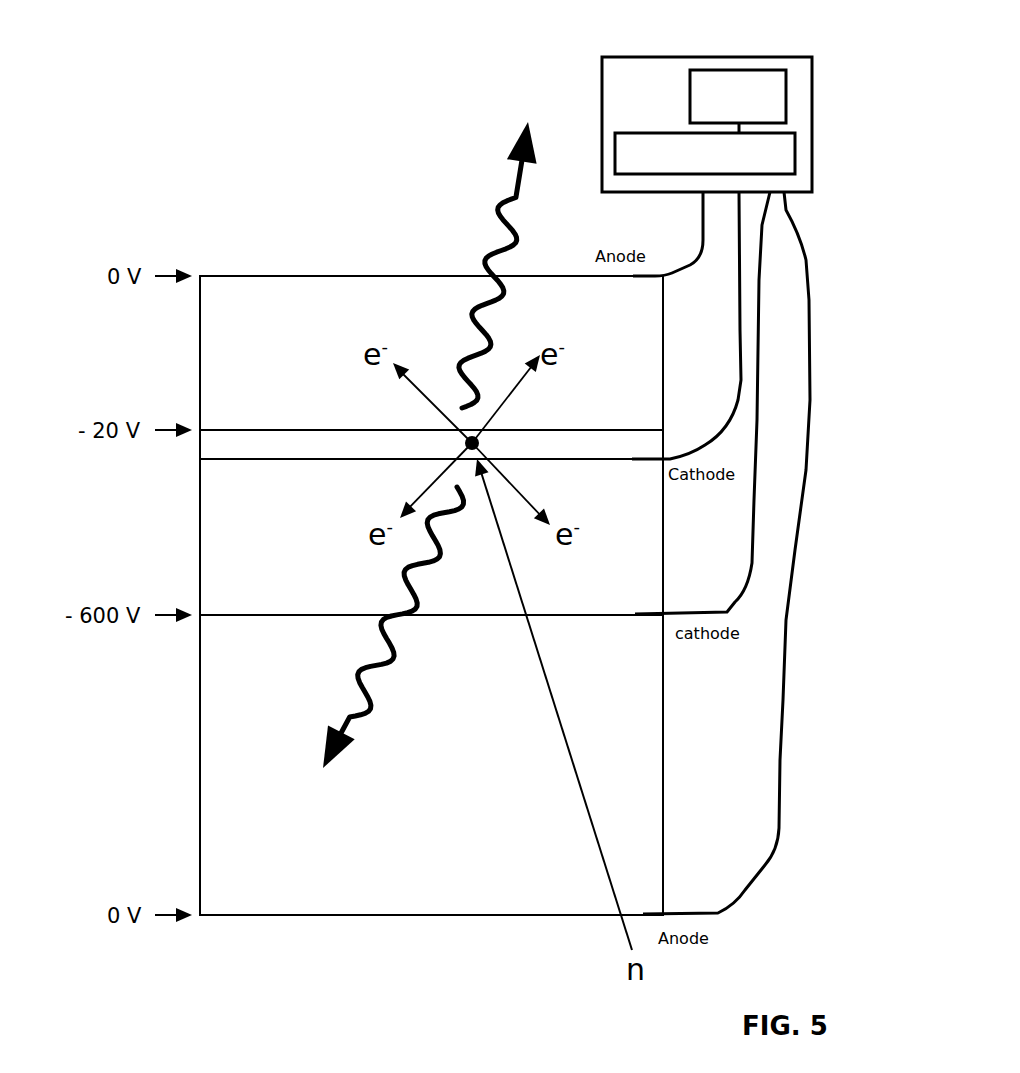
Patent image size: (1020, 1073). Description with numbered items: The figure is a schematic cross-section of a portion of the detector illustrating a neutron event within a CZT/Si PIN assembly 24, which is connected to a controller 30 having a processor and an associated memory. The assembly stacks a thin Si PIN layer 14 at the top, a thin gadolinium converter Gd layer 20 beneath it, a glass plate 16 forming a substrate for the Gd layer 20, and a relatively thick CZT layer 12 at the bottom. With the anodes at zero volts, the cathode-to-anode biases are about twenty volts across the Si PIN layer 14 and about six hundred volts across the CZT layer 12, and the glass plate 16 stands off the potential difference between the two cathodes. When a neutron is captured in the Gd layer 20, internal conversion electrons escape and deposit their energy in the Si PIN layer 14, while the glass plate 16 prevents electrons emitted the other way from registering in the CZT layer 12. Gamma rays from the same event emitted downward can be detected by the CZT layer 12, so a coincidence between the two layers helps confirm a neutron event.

The CZT layer 12 is at (215, 748).
The Si PIN layer 14 is at (223, 349).
The glass plate 16 is at (220, 558).
The Gd layer 20 is at (222, 443).
The CZT/Si PIN assembly 24 is at (268, 202).
The controller 30 is at (694, 462).